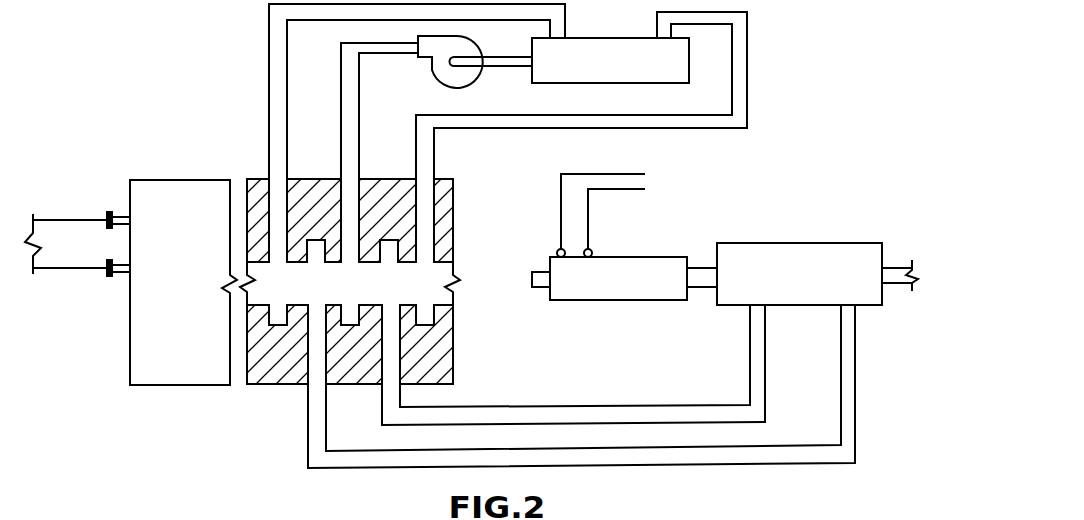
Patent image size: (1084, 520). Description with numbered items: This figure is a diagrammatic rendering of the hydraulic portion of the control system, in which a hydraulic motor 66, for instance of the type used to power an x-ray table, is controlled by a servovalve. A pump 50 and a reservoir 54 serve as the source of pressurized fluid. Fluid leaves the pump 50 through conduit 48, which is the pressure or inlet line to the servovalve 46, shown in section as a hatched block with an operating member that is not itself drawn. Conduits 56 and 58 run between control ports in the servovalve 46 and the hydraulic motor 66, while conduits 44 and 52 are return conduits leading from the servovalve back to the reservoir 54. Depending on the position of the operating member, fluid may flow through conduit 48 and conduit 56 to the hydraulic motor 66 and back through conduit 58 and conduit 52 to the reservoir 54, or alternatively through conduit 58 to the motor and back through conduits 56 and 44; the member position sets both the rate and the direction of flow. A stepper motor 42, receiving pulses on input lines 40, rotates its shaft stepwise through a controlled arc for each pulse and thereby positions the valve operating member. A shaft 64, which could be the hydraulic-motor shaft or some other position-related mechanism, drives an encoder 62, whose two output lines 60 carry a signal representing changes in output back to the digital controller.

The input lines 40 is at (88, 222).
The stepper motor 42 is at (172, 180).
The conduit 44 is at (269, 135).
The servovalve 46 is at (310, 179).
The conduit 48 is at (341, 131).
The pump 50 is at (437, 70).
The conduit 52 is at (416, 141).
The reservoir 54 is at (617, 38).
The conduit 56 is at (309, 422).
The conduit 58 is at (383, 400).
The output lines 60 is at (561, 214).
The encoder 62 is at (610, 300).
The shaft 64 is at (701, 290).
The hydraulic motor 66 is at (808, 243).